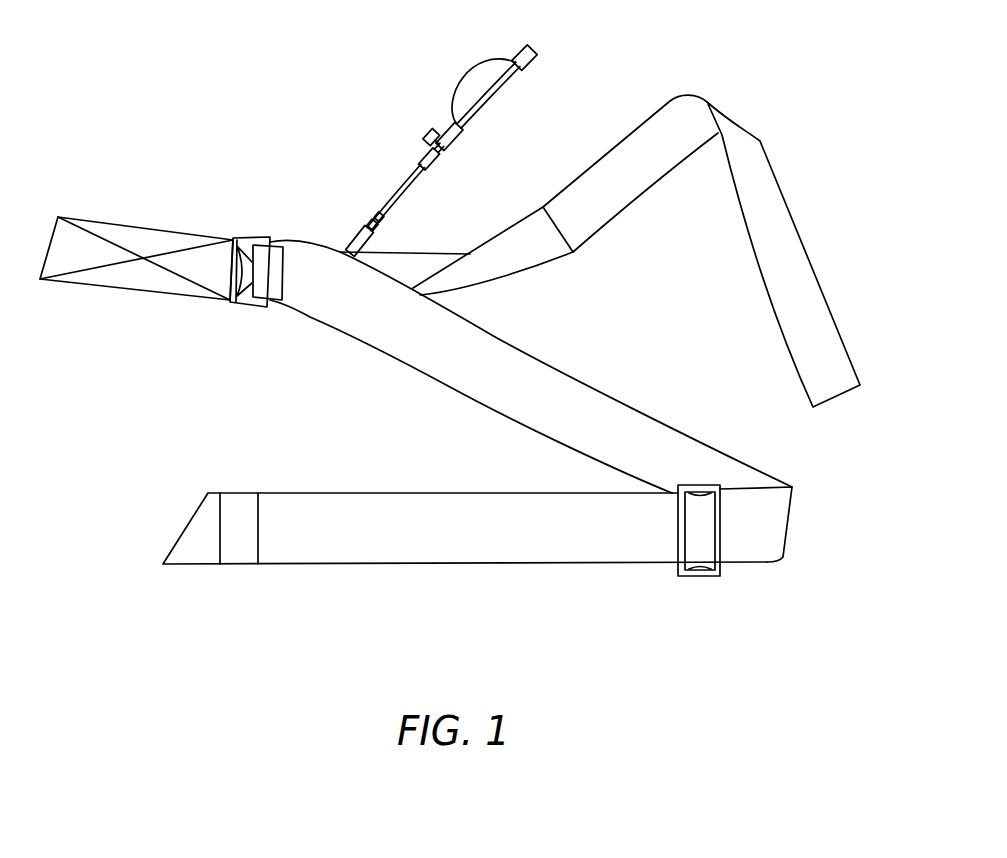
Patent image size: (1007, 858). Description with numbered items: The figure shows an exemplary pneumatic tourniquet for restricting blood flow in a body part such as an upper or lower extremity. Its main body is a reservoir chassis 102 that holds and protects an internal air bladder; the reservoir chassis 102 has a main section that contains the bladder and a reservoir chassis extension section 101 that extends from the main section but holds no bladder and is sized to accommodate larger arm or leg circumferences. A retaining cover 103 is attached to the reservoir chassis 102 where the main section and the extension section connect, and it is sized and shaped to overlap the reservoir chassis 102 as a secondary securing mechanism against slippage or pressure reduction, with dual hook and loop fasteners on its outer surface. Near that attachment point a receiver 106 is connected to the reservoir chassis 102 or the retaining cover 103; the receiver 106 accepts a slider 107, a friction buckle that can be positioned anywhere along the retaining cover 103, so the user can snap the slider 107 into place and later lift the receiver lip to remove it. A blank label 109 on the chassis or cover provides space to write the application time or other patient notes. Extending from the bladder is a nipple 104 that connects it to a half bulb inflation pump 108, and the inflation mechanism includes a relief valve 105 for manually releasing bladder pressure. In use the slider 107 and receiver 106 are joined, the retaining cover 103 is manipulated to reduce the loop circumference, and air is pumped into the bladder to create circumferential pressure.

The reservoir chassis extension section 101 is at (103, 227).
The reservoir chassis 102 is at (768, 252).
The retaining cover 103 is at (497, 550).
The nipple 104 is at (353, 237).
The relief valve 105 is at (423, 138).
The receiver 106 is at (256, 251).
The slider 107 is at (698, 575).
The half bulb inflation pump 108 is at (468, 80).
The blank label 109 is at (242, 555).